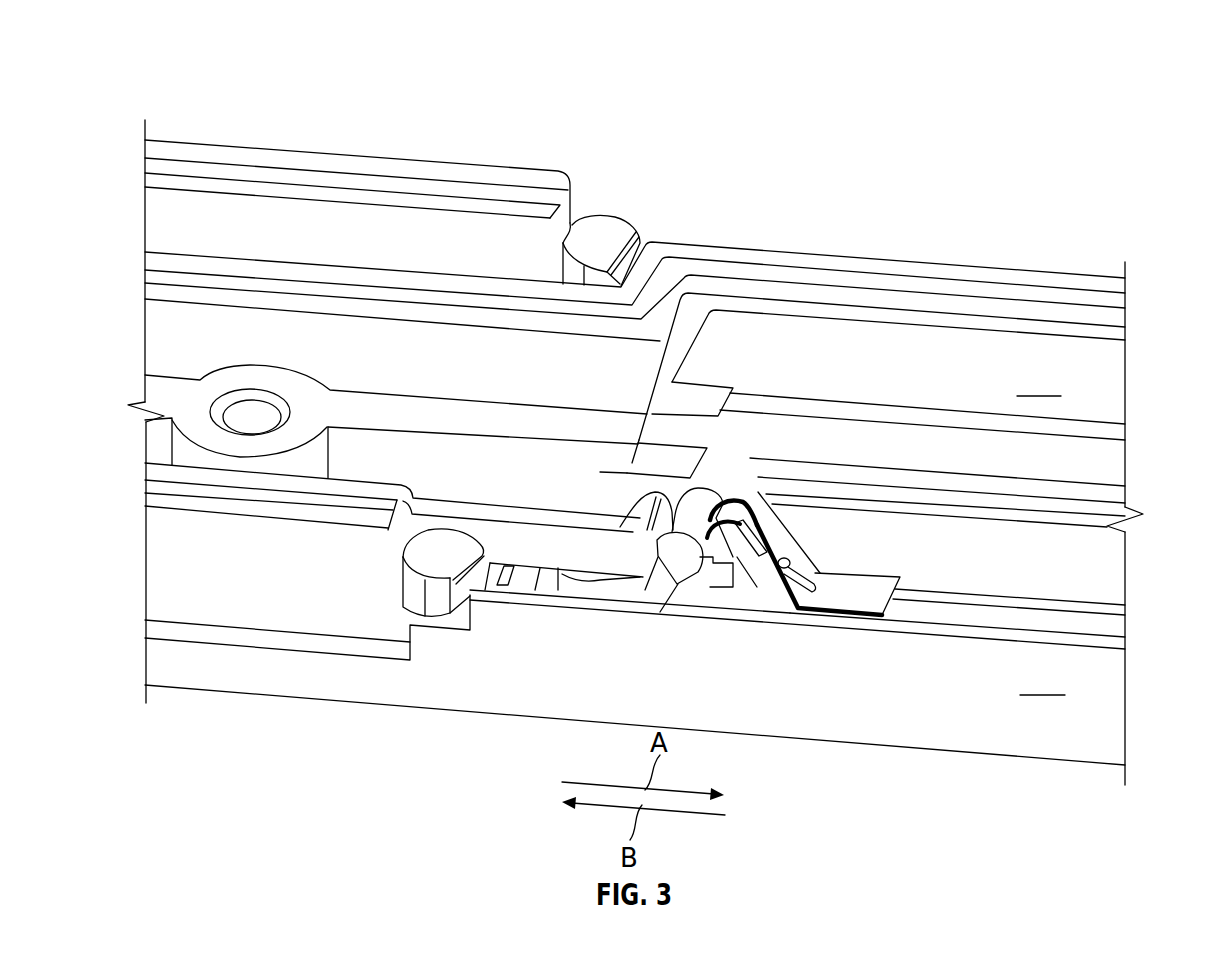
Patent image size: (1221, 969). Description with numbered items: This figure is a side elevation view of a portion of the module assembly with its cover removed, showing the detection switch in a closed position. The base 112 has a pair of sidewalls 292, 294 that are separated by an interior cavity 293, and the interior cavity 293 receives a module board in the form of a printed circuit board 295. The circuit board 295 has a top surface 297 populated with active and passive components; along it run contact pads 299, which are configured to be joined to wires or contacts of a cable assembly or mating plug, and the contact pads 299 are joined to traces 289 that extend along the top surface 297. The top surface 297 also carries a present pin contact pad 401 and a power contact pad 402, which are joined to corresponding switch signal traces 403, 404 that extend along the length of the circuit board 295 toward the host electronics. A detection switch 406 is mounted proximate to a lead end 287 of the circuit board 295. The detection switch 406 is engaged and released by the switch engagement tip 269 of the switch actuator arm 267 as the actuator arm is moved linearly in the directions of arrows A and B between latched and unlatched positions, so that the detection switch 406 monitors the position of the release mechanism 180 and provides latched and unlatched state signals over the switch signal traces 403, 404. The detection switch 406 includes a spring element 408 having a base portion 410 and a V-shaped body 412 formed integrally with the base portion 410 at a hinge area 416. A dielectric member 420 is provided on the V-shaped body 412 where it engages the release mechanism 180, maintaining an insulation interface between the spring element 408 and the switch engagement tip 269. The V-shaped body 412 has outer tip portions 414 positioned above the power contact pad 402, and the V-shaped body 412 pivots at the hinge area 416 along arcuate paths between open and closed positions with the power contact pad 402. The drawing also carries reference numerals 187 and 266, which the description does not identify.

The release mechanism 180 is at (186, 76).
The guide rail 187 is at (304, 145).
The sidewall 292 is at (968, 268).
The interior cavity 293 is at (868, 298).
The printed circuit board 295 is at (1114, 372).
The top surface 297 is at (1039, 384).
The contact pads 299 is at (698, 385).
The traces 289 is at (830, 408).
The detection switch 406 is at (674, 480).
The lead end 287 is at (630, 444).
The switch actuator arm 267 is at (497, 515).
The switch engagement tip 269 is at (612, 512).
The slider knob 266 is at (433, 595).
The base portion 410 is at (610, 583).
The dielectric member 420 is at (682, 487).
The hinge area 416 is at (655, 590).
The spring element 408 is at (752, 485).
The present pin contact pad 401 is at (688, 592).
The V-shaped body 412 is at (775, 530).
The outer tip portions 414 is at (798, 573).
The power contact pad 402 is at (873, 592).
The switch signal trace 403 is at (995, 515).
The switch signal trace 404 is at (1030, 603).
The sidewall 294 is at (797, 648).
The base 112 is at (1020, 733).